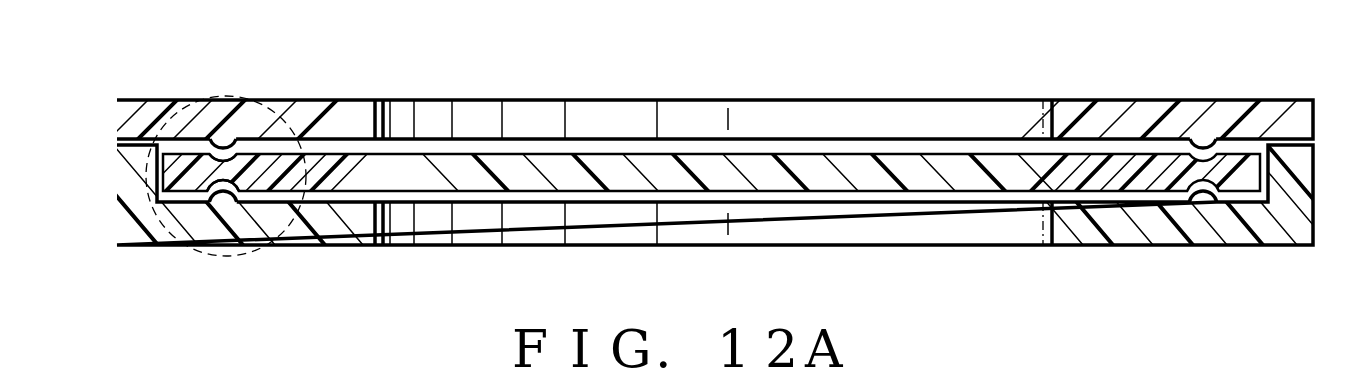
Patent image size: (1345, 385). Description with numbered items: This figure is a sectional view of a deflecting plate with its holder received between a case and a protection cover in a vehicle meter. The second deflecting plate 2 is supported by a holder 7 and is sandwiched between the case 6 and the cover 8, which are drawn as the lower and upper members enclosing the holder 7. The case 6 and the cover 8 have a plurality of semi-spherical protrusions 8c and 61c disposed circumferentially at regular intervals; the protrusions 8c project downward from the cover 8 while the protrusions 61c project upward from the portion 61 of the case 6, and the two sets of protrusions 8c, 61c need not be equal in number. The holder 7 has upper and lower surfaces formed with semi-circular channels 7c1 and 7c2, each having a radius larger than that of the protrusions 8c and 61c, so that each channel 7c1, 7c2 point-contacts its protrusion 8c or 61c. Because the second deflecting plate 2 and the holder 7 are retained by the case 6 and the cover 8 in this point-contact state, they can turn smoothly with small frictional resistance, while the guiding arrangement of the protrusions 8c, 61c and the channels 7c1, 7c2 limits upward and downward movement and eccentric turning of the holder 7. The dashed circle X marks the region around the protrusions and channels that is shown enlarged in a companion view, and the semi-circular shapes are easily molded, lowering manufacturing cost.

The second deflecting plate 2 is at (575, 183).
The case 6 is at (125, 214).
The holder 7 is at (180, 172).
The cover 8 is at (135, 117).
The lower holding portion 61 is at (160, 238).
The semi-spherical protrusion 61c is at (206, 222).
The semi-circular channel 7c1 is at (189, 162).
The semi-circular channel 7c2 is at (268, 180).
The semi-spherical protrusion 8c is at (226, 146).
The circle X is at (293, 117).